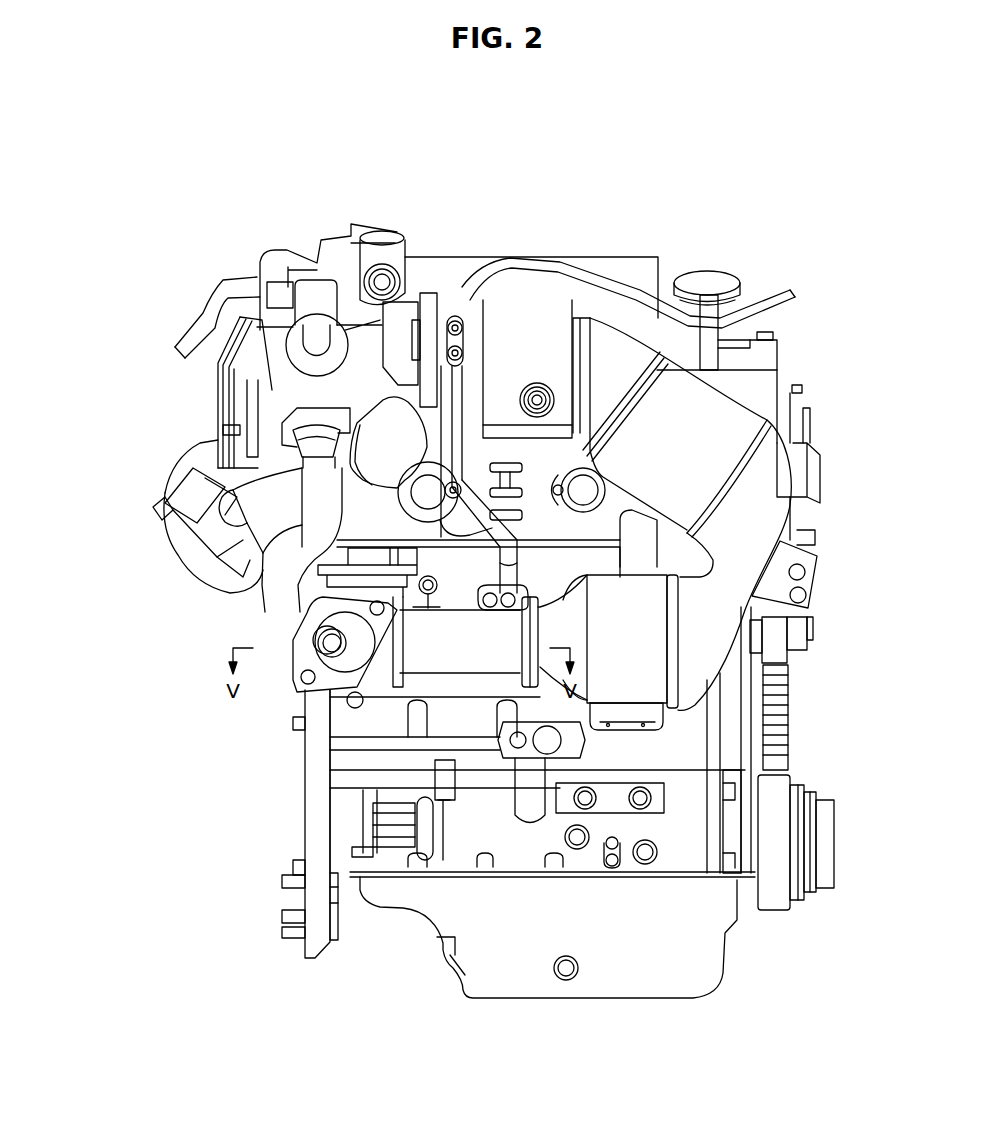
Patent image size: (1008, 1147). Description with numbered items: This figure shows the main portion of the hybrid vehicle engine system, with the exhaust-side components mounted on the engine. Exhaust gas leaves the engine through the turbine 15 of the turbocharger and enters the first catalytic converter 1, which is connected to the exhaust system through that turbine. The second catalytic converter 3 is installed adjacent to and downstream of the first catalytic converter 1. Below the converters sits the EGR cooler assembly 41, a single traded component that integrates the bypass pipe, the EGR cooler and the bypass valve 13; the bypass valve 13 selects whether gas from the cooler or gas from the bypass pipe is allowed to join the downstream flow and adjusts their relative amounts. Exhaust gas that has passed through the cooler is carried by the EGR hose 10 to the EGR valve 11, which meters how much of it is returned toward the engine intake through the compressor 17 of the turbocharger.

The first catalytic converter 1 is at (686, 425).
The second catalytic converter 3 is at (640, 668).
The EGR hose 10 is at (250, 608).
The EGR valve 11 is at (297, 420).
The bypass valve 13 is at (260, 520).
The turbine 15 is at (556, 345).
The compressor 17 is at (395, 362).
The EGR cooler assembly 41 is at (470, 640).